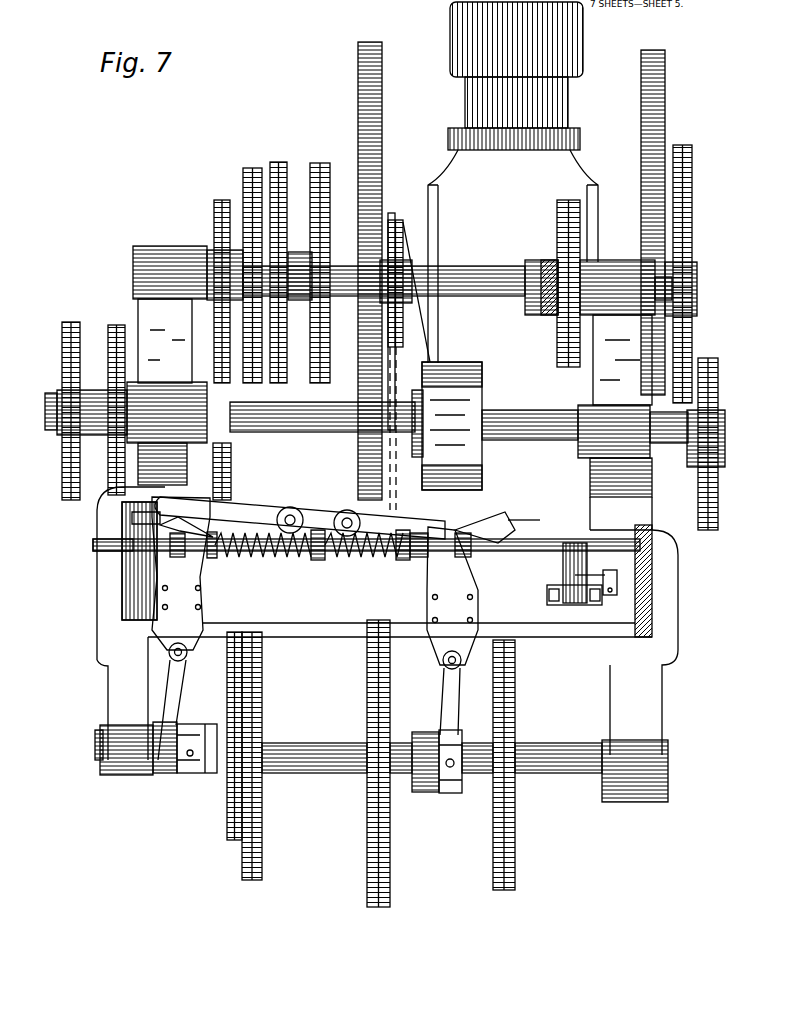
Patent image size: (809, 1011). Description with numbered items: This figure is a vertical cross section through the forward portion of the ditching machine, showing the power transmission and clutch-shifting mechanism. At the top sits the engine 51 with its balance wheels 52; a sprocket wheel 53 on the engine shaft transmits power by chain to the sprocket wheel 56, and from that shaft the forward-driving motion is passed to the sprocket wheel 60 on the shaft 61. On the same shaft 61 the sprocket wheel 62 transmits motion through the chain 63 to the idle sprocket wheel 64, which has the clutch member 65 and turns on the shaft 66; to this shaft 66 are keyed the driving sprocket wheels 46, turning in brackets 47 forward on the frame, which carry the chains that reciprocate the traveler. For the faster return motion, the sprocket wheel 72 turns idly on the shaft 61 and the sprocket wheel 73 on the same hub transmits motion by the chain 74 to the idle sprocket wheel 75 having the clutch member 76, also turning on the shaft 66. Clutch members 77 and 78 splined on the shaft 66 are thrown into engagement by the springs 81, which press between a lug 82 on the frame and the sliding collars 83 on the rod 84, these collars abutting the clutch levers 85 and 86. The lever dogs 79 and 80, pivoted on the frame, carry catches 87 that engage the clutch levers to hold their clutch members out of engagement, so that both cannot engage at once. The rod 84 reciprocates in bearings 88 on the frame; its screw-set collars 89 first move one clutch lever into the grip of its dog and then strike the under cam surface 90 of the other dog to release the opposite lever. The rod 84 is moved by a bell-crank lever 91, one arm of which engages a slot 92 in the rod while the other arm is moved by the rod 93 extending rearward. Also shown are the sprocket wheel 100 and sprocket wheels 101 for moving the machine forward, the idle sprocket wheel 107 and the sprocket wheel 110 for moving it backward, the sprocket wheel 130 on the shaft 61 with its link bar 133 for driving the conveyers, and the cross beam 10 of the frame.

The cross beam 10 is at (712, 358).
The driving sprocket wheels 46 is at (250, 880).
The brackets 47 is at (108, 697).
The engine 51 is at (513, 182).
The balance wheels 52 is at (358, 72).
The sprocket wheel 53 is at (692, 264).
The sprocket wheel 56 is at (692, 196).
The sprocket wheel 60 is at (340, 154).
The shaft 61 is at (496, 280).
The sprocket wheel 62 is at (402, 220).
The chain 63 is at (412, 348).
The idle sprocket wheel 64 is at (368, 818).
The clutch member 65 is at (440, 795).
The shaft 66 is at (337, 733).
The sprocket wheel 72 is at (280, 163).
The sprocket wheel 73 is at (249, 172).
The chain 74 is at (288, 506).
The idle sprocket wheel 75 is at (230, 842).
The clutch member 76 is at (208, 778).
The clutch member 77 is at (445, 792).
The clutch member 78 is at (183, 775).
The lever dog 79 is at (284, 506).
The lever dog 80 is at (470, 518).
The springs 81 is at (292, 558).
The lug 82 is at (320, 565).
The sliding collars 83 is at (214, 560).
The rod 84 is at (548, 551).
The clutch lever 85 is at (445, 676).
The clutch lever 86 is at (190, 656).
The catches 87 is at (213, 519).
The bearings 88 is at (100, 553).
The screw-set collars 89 is at (177, 552).
The cam surface 90 is at (132, 518).
The bell-crank lever 91 is at (562, 573).
The slot 92 is at (560, 555).
The rod 93 is at (618, 590).
The sprocket wheel 100 is at (128, 320).
The sprocket wheels 101 is at (70, 328).
The idle sprocket wheel 107 is at (223, 206).
The sprocket wheel 110 is at (230, 452).
The sprocket wheel 130 is at (635, 262).
The link bar 133 is at (540, 317).